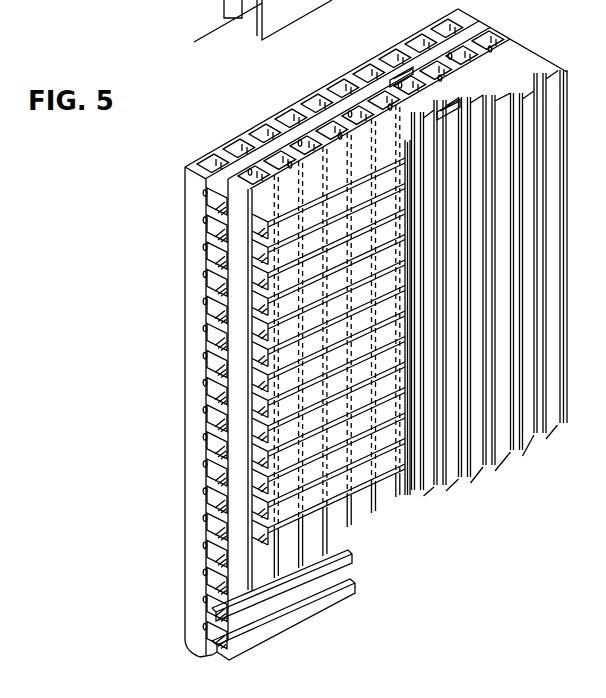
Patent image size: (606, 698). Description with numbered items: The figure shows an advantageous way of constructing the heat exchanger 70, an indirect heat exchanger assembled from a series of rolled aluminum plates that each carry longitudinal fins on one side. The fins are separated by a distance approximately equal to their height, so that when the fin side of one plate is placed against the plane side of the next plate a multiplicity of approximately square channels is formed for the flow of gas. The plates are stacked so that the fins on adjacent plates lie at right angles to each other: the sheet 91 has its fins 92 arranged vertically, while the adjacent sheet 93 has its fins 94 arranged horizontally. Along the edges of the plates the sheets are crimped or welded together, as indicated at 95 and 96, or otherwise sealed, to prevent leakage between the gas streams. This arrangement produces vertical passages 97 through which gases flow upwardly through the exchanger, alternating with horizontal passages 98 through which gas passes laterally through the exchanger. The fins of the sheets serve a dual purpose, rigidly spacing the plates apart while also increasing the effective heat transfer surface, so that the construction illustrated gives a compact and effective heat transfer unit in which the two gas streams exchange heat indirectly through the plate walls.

The heat exchanger 70 is at (184, 187).
The rolled aluminum sheet 91 is at (291, 108).
The longitudinal fins 92 is at (255, 136).
The adjacent sheet 93 is at (207, 200).
The fins 94 is at (211, 274).
The crimped or welded edge 95 is at (342, 129).
The crimped or welded edge 96 is at (211, 334).
The vertical passages 97 is at (367, 114).
The horizontal passages 98 is at (214, 392).